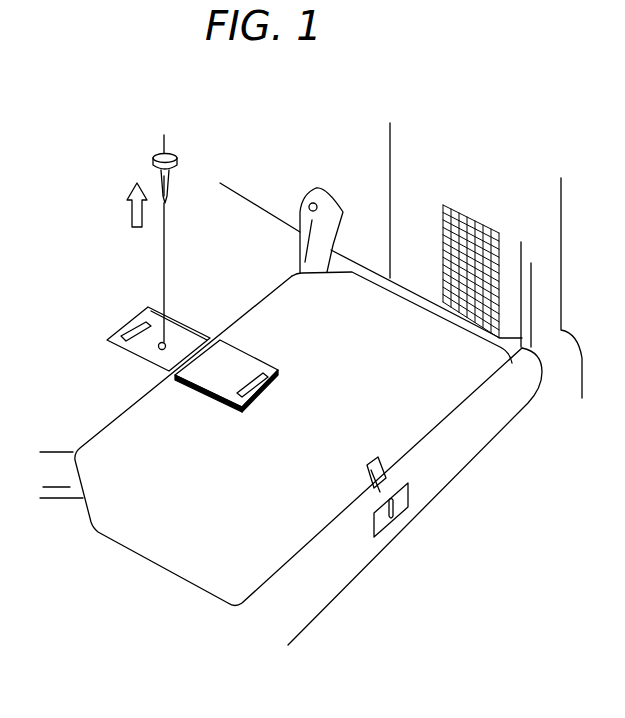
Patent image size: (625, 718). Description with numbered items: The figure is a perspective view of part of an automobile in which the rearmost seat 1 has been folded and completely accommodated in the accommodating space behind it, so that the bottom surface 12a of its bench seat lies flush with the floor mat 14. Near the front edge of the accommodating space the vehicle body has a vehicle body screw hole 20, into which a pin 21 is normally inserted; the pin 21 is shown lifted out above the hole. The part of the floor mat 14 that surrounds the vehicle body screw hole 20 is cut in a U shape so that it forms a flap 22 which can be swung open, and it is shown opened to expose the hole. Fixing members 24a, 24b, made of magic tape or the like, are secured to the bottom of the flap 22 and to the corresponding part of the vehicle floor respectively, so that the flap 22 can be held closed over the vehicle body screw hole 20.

The rearmost seat 1 is at (328, 409).
The bottom surface 12a is at (270, 498).
The floor mat 14 is at (138, 428).
The vehicle body screw hole 20 is at (164, 343).
The pin 21 is at (177, 163).
The flap 22 is at (251, 371).
The fixing member 24a is at (267, 388).
The fixing member 24b is at (135, 330).